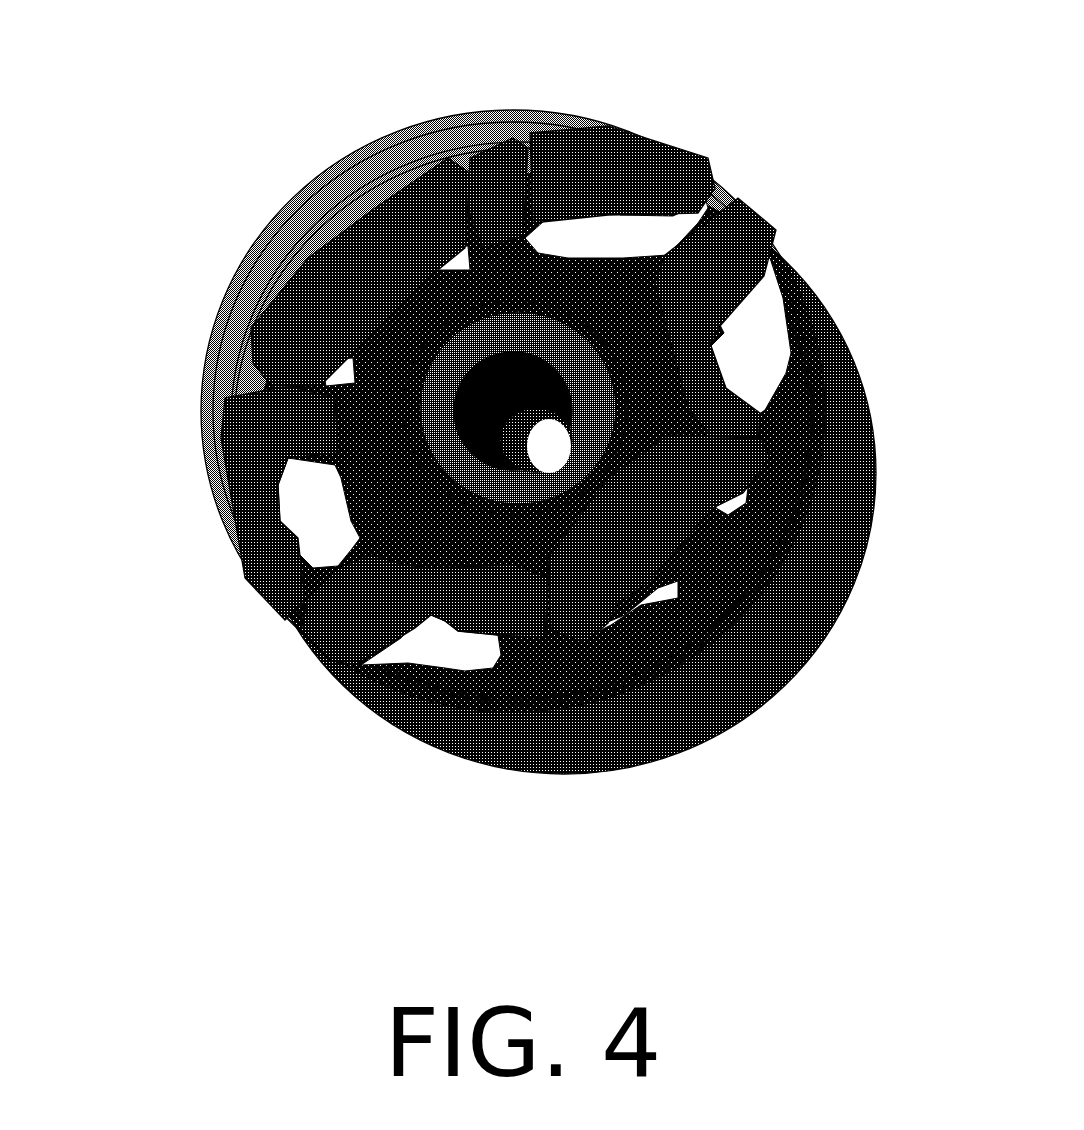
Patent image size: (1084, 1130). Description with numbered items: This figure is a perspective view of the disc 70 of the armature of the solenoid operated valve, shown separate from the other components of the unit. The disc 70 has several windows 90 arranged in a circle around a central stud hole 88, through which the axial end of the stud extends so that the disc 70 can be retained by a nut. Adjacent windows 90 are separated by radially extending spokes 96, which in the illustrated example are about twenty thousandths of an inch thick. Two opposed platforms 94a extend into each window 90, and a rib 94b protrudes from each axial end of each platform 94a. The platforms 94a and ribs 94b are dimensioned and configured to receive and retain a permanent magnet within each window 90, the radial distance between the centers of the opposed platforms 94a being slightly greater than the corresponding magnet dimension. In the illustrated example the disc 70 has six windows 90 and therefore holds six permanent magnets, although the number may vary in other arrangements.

The disc 70 is at (392, 737).
The stud hole 88 is at (535, 460).
The window 90 is at (600, 145).
The platform 94a is at (700, 162).
The rib 94b is at (585, 155).
The spoke 96 is at (500, 233).